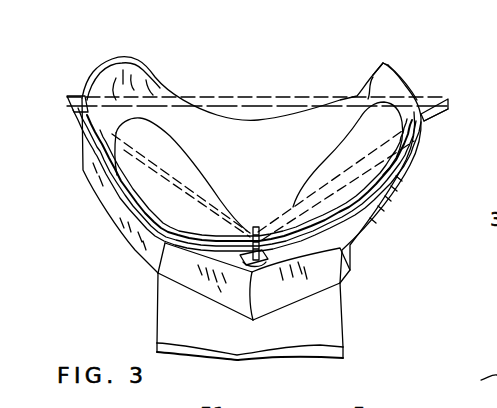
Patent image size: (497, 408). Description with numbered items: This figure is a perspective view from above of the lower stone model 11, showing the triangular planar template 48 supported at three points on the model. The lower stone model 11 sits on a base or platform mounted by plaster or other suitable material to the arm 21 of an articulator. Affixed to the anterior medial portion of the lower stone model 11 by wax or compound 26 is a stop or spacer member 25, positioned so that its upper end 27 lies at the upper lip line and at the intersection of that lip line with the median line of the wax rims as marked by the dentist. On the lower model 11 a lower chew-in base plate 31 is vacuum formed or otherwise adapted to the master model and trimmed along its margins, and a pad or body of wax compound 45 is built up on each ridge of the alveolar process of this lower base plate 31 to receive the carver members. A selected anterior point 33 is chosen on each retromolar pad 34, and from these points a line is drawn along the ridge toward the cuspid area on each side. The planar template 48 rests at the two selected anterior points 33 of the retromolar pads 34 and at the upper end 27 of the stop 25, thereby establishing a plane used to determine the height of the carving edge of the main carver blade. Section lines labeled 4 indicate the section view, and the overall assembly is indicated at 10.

The section line 4- 4 is at (254, 50).
The dental articulator 10 is at (477, 381).
The lower stone model 11 is at (147, 250).
The arm of an articulator 21 is at (170, 313).
The stop or spacer member 25 is at (246, 300).
The wax or compound 26 is at (266, 268).
The upper end of the stop 27 is at (256, 227).
The lower chew-in base plate 31 is at (143, 190).
The selected anterior point of the retromolar pad 33 is at (112, 107).
The retromolar pad 34 is at (385, 90).
The pad or body of wax compound 45 is at (362, 177).
The planar template 48 is at (438, 122).